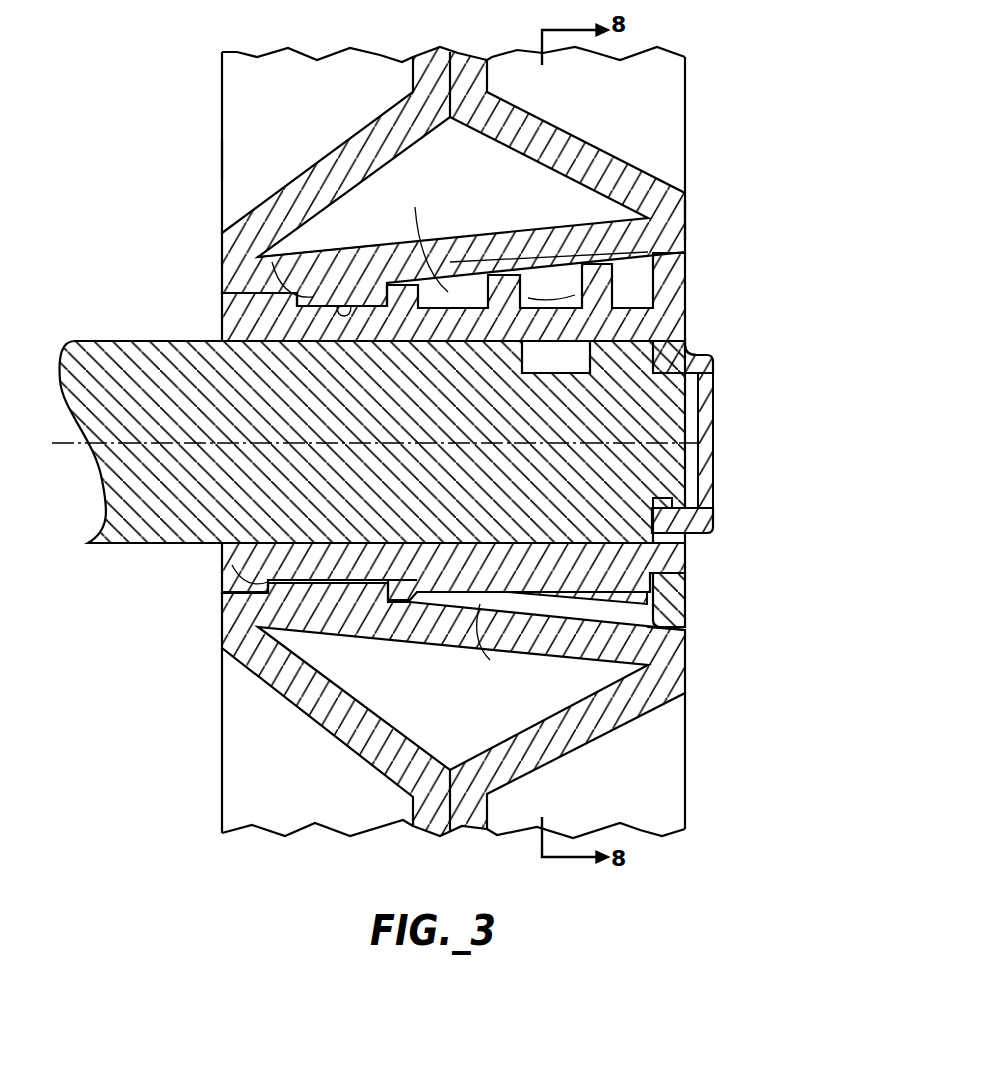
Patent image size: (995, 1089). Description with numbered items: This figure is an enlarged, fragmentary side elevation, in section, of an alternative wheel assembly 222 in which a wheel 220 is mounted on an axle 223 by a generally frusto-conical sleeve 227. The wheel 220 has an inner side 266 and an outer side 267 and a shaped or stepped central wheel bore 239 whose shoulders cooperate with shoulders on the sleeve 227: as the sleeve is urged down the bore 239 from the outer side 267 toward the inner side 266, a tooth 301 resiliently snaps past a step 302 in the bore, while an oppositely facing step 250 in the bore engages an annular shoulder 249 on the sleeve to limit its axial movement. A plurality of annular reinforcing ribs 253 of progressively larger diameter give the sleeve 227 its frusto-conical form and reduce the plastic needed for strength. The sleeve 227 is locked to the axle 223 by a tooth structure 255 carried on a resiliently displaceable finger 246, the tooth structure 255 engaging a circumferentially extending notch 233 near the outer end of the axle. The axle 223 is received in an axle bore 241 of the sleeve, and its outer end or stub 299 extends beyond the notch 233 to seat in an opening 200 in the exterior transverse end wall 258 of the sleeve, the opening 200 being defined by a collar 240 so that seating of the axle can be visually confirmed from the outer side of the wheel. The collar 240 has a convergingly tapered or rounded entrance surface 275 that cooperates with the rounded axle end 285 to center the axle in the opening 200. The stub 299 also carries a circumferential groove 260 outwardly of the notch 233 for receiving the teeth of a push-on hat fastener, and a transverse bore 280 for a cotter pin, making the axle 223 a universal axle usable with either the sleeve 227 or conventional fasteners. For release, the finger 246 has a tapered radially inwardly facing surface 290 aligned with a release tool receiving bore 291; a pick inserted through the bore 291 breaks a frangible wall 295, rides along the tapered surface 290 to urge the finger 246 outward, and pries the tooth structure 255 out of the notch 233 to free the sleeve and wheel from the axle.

The opening 200 is at (716, 385).
The wheel 220 is at (571, 136).
The wheel assembly 222 is at (720, 158).
The axle 223 is at (118, 548).
The sleeve 227 is at (688, 321).
The notch 233 is at (600, 373).
The wheel bore 239 is at (373, 282).
The collar 240 is at (718, 518).
The axle bore 241 is at (265, 358).
The resilient finger 246 is at (513, 600).
The annular shoulder 249 is at (407, 598).
The step 250 is at (410, 603).
The annular reinforcing ribs 253 is at (600, 262).
The tooth structure 255 is at (545, 603).
The exterior transverse end wall 258 is at (702, 352).
The groove 260 is at (686, 545).
The inner side 266 is at (222, 158).
The outer side 267 is at (685, 211).
The tapered collar entrance 275 is at (664, 497).
The transverse bore 280 is at (706, 462).
The rounded axle end 285 is at (714, 500).
The tapered surface 290 is at (684, 562).
The release tool receiving bore 291 is at (684, 572).
The frangible wall 295 is at (686, 629).
The axle stub 299 is at (712, 447).
The tooth 301 is at (261, 256).
The step 302 is at (228, 297).